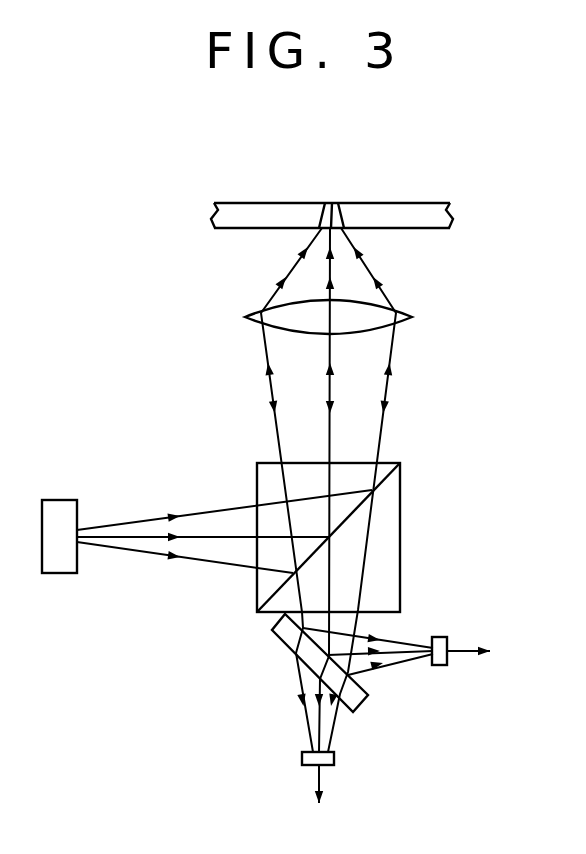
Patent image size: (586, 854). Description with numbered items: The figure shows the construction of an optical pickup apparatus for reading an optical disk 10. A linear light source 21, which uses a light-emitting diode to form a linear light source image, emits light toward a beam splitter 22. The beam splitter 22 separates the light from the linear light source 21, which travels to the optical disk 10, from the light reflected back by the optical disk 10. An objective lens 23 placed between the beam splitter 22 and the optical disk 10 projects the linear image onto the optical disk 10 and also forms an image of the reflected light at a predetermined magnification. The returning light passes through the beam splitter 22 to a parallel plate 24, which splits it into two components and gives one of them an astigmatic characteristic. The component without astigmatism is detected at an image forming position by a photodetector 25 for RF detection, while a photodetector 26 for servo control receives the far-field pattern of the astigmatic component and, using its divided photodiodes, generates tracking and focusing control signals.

The optical disk 10 is at (397, 203).
The linear light source 21 is at (64, 575).
The beam splitter 22 is at (400, 493).
The objective lens 23 is at (412, 317).
The parallel plate 24 is at (368, 697).
The photodetector for RF detection 25 is at (440, 636).
The photodetector for servo control 26 is at (305, 767).